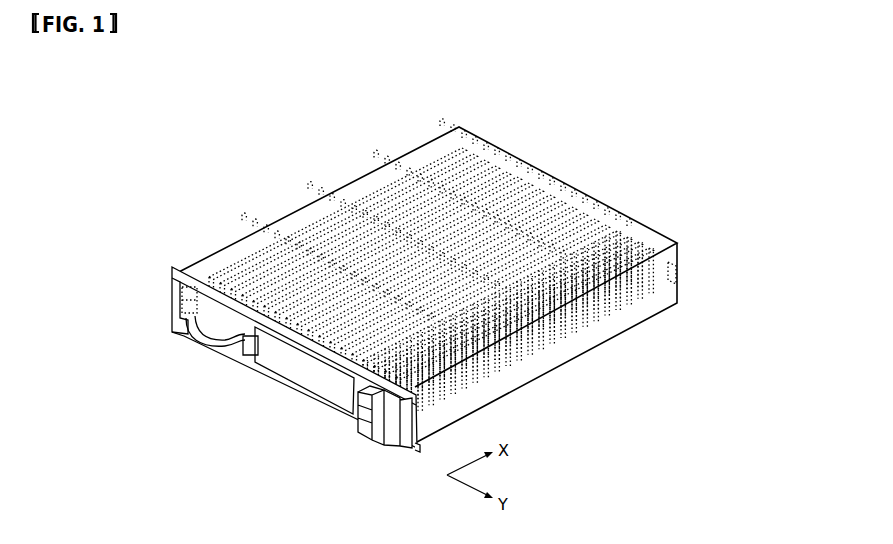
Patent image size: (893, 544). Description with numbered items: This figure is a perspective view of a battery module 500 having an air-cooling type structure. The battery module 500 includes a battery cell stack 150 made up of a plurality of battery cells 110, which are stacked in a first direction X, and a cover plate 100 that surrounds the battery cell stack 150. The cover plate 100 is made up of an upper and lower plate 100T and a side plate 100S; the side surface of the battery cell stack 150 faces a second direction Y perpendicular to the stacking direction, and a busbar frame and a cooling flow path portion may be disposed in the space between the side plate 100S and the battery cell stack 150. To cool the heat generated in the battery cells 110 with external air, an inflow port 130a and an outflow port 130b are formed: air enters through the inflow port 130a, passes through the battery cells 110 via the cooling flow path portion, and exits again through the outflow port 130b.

The battery module 500 is at (292, 197).
The battery cell stack 150 is at (357, 200).
The battery cell 110 is at (226, 287).
The cover plate 100 is at (713, 147).
The upper and lower plate 100T is at (572, 193).
The side plate 100S is at (643, 367).
The inflow port 130a is at (182, 301).
The outflow port 130b is at (677, 270).